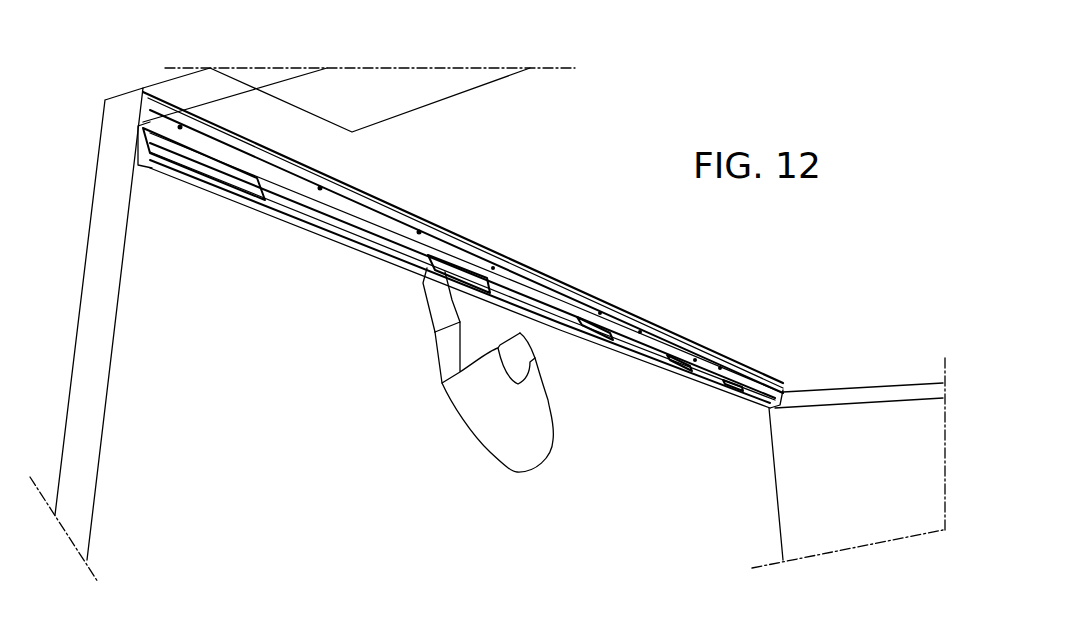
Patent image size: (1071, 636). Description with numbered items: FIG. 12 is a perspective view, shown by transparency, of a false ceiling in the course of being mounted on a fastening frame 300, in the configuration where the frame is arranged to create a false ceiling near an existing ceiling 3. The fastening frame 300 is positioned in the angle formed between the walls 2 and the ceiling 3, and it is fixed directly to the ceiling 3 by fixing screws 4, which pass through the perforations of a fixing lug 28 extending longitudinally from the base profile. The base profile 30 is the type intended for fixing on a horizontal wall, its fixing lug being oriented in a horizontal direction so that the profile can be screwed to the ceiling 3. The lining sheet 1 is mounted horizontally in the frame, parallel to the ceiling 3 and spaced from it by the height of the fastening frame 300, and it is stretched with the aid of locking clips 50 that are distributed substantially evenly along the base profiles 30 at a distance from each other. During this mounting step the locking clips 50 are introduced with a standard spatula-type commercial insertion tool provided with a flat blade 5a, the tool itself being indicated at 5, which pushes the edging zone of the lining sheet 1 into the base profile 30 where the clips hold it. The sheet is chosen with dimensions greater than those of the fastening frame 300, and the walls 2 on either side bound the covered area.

The lining sheet 1 is at (460, 250).
The wall 2 is at (115, 150).
The ceiling 3 is at (200, 88).
The fixing screws 4 is at (553, 293).
The roller 5 is at (467, 370).
The flat blade 5a is at (435, 302).
The fixing lug 28 is at (443, 237).
The base profile 30 is at (284, 222).
The locking clips 50 is at (185, 167).
The fastening frame 300 is at (318, 155).